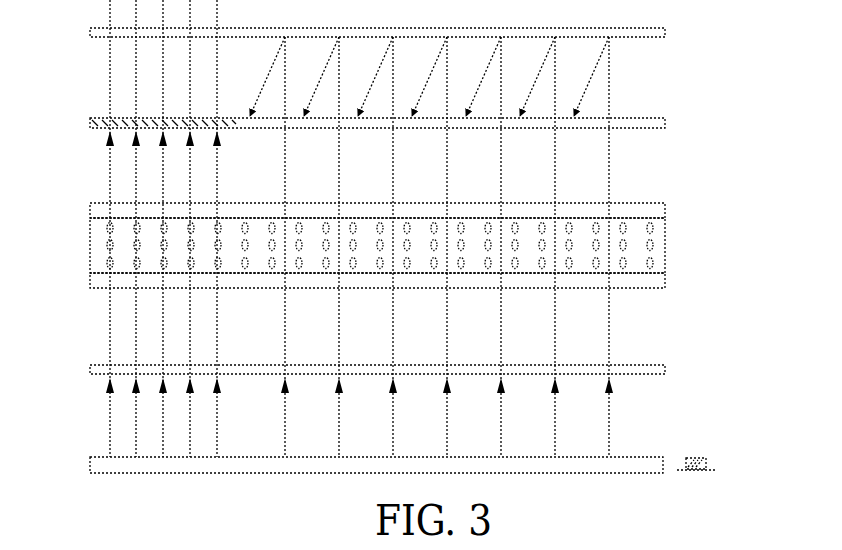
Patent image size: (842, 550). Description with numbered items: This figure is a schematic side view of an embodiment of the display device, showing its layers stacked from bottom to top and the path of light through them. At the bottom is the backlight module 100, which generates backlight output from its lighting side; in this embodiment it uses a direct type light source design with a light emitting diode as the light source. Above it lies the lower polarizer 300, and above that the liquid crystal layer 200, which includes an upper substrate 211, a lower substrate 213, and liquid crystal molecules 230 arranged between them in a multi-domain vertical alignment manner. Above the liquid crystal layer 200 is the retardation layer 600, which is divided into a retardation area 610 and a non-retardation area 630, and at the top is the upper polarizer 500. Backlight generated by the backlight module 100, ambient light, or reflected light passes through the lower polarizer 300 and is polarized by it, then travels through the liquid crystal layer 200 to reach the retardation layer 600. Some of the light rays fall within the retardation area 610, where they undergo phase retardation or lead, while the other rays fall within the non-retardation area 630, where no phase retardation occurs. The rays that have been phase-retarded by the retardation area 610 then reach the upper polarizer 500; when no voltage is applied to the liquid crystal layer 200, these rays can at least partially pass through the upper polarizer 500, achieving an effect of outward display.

The backlight module 100 is at (723, 413).
The liquid crystal layer 200 is at (444, 246).
The upper substrate 211 is at (665, 210).
The lower substrate 213 is at (414, 280).
The liquid crystal molecules 230 is at (665, 245).
The lower polarizer 300 is at (665, 369).
The upper polarizer 500 is at (665, 33).
The retardation layer 600 is at (423, 103).
The retardation area 610 is at (90, 128).
The non-retardation area 630 is at (665, 123).